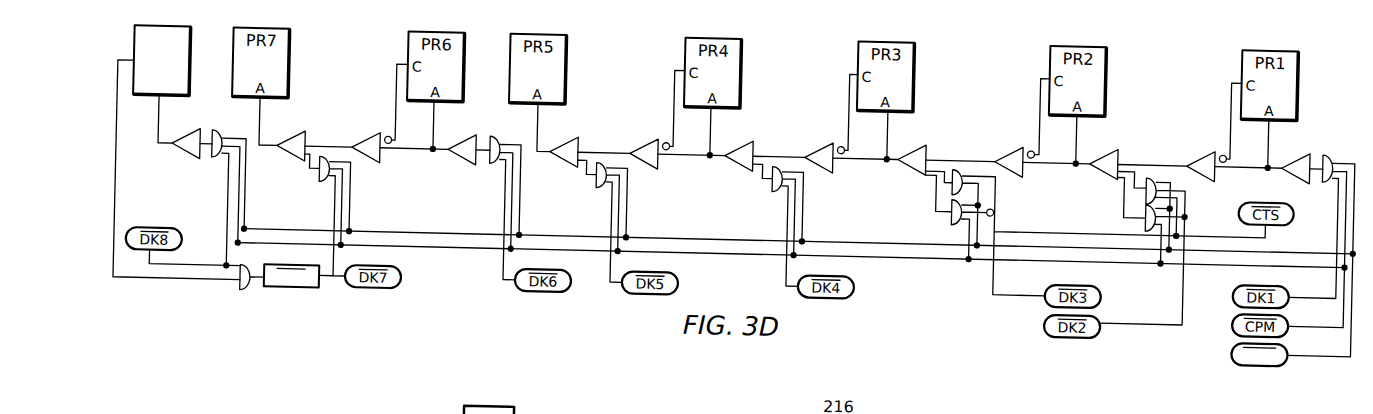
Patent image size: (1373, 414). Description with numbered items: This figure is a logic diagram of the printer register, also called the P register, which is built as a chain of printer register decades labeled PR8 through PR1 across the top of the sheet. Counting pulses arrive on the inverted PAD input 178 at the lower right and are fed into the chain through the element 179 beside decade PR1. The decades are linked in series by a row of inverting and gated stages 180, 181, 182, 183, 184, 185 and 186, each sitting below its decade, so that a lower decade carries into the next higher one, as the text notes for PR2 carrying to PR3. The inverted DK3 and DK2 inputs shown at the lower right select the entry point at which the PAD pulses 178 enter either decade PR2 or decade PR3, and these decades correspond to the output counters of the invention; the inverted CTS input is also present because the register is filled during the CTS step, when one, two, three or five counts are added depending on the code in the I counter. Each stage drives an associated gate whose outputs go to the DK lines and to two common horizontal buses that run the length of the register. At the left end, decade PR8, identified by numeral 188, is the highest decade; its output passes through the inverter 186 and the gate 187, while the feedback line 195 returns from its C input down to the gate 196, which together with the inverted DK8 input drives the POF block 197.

The PAD input 178 is at (1236, 330).
The inverter for PR1 179 is at (1306, 129).
The inverter for PR2 180 is at (1115, 129).
The inverter for PR3 181 is at (922, 130).
The inverter for PR4 182 is at (750, 129).
The inverter for PR5 183 is at (574, 129).
The inverter for PR6 184 is at (472, 129).
The inverter for PR7 185 is at (298, 129).
The inverter for PR8 186 is at (180, 155).
The AND gate 187 is at (216, 129).
The flip-flop PR8 188 is at (190, 70).
The feedback line 195 is at (118, 189).
The AND gate 196 is at (238, 290).
The POF register 197 is at (312, 285).